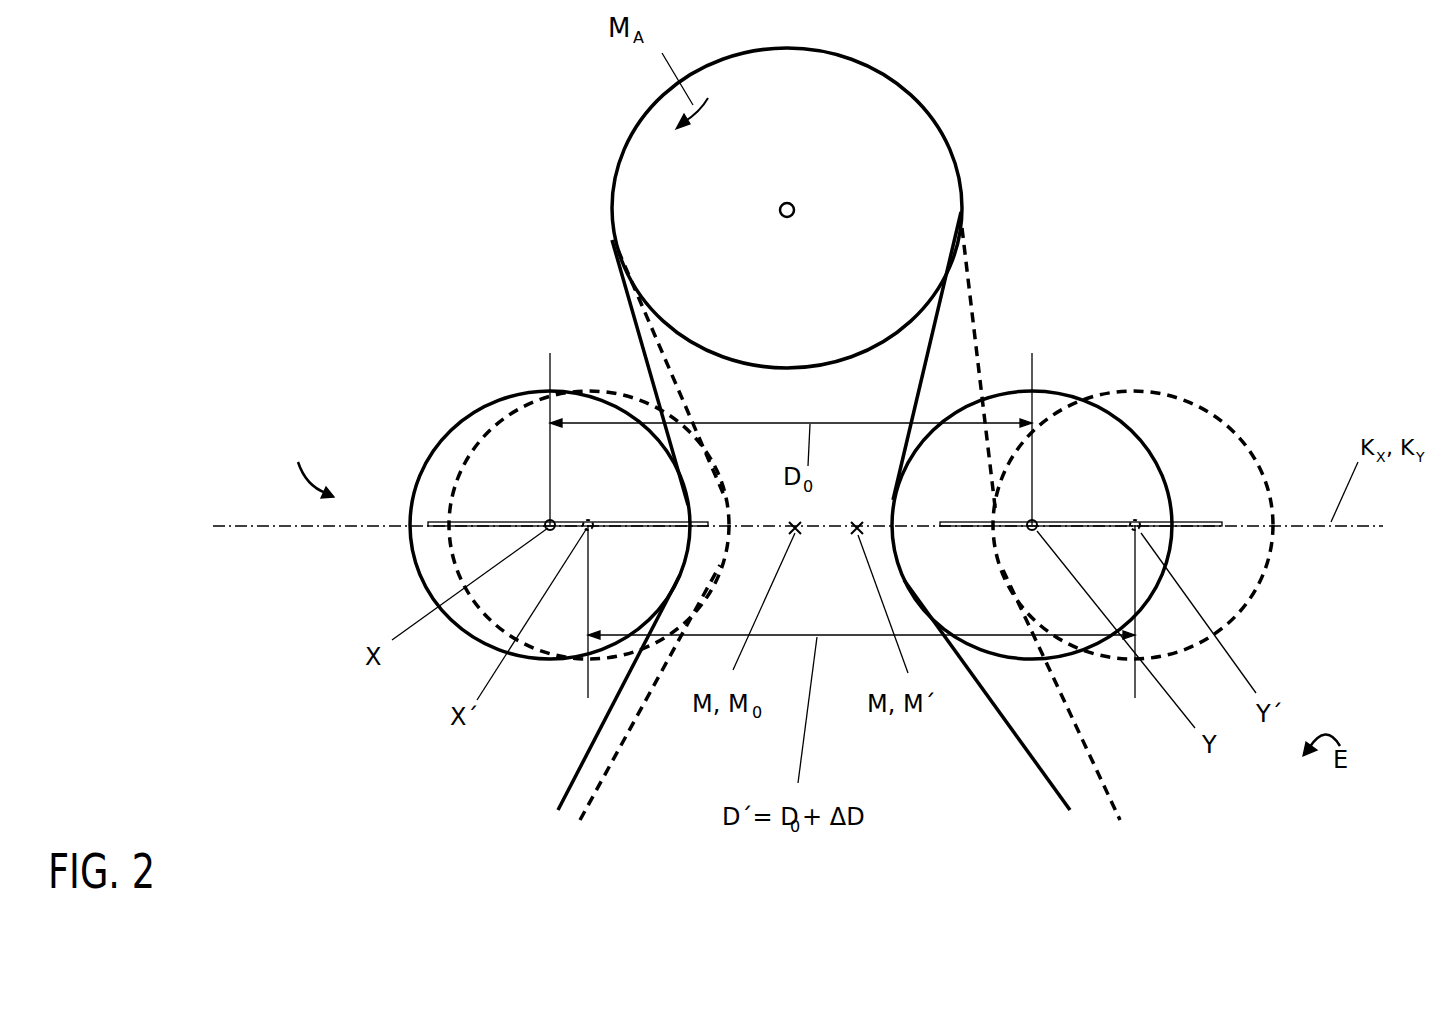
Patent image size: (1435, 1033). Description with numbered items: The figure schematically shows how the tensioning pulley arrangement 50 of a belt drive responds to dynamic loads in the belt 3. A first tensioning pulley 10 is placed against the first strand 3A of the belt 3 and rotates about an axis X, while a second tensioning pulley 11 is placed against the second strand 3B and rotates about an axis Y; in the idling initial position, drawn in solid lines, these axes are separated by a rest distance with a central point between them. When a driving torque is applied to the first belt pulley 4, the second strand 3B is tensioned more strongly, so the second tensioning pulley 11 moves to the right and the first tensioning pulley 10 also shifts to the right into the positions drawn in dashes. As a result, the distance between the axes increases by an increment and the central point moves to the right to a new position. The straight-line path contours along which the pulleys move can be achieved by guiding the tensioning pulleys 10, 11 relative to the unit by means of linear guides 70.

The belt 3 is at (602, 723).
The first strand 3A is at (680, 393).
The second strand 3B is at (930, 325).
The first belt pulley 4 is at (848, 110).
The first tensioning pulley 10 is at (497, 423).
The second tensioning pulley 11 is at (1053, 390).
The tensioning pulley arrangement 50 is at (312, 468).
The linear guides 70 is at (516, 522).